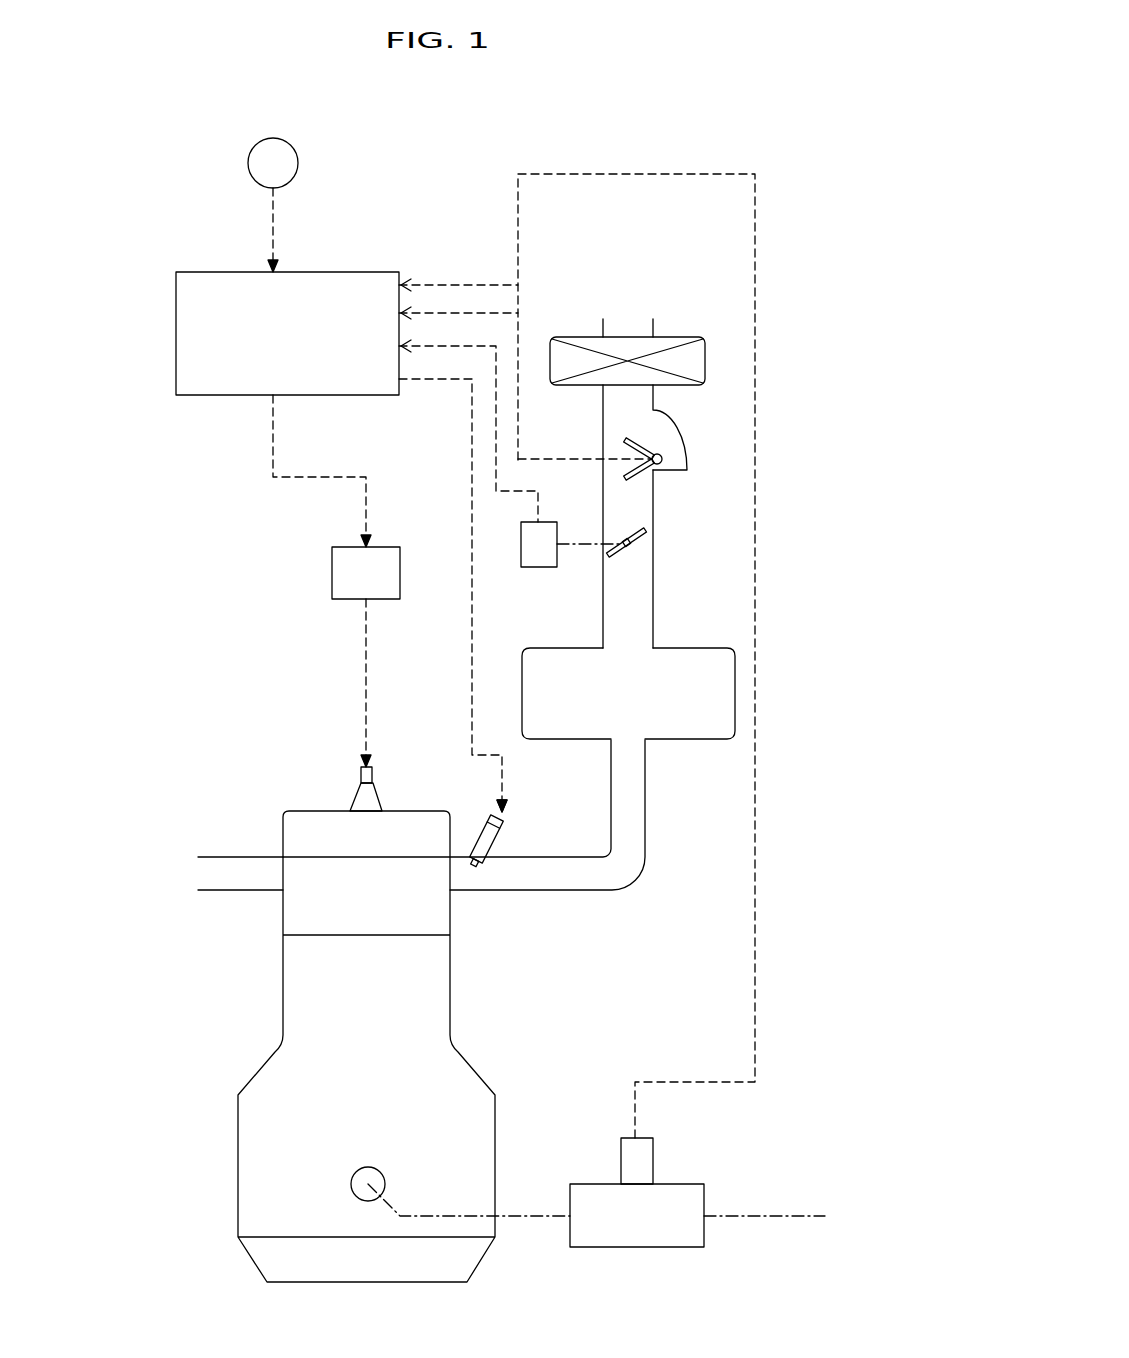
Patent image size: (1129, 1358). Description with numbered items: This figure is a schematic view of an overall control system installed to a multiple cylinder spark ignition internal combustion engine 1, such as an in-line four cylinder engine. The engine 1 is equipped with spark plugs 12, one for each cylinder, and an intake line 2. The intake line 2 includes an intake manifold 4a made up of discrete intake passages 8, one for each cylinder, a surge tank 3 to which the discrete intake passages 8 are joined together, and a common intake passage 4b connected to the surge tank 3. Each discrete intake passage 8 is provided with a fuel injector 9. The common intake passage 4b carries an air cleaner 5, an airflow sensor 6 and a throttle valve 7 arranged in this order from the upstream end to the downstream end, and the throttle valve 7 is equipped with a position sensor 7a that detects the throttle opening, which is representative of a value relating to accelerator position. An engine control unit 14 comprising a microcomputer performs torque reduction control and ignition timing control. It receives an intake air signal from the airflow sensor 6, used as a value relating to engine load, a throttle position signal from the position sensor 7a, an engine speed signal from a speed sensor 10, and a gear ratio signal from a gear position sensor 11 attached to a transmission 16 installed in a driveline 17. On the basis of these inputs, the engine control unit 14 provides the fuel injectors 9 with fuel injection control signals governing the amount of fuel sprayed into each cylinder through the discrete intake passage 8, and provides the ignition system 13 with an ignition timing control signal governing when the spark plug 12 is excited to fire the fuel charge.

The engine 1 is at (468, 1020).
The intake line 2 is at (708, 486).
The surge tank 3 is at (712, 648).
The intake manifold 4a is at (508, 815).
The common intake passage 4b is at (653, 597).
The air cleaner 5 is at (703, 337).
The airflow sensor 6 is at (663, 470).
The throttle valve 7 is at (647, 536).
The position sensor 7a is at (537, 567).
The discrete intake passage 8 is at (645, 824).
The fuel injector 9 is at (510, 825).
The speed sensor 10 is at (653, 1160).
The gear position sensor 11 is at (297, 150).
The spark plug 12 is at (355, 795).
The ignition system 13 is at (335, 547).
The engine control unit 14 is at (370, 272).
The transmission 16 is at (685, 1247).
The driveline 17 is at (540, 1216).